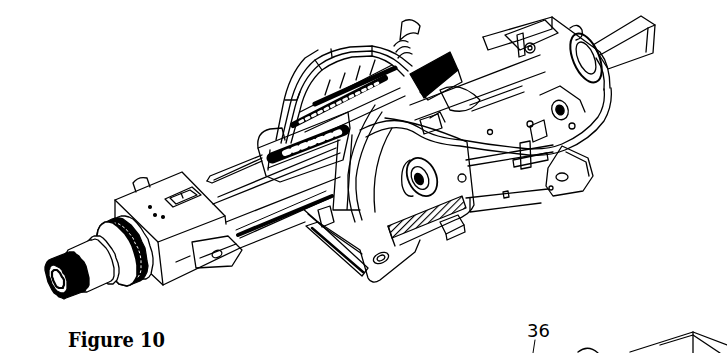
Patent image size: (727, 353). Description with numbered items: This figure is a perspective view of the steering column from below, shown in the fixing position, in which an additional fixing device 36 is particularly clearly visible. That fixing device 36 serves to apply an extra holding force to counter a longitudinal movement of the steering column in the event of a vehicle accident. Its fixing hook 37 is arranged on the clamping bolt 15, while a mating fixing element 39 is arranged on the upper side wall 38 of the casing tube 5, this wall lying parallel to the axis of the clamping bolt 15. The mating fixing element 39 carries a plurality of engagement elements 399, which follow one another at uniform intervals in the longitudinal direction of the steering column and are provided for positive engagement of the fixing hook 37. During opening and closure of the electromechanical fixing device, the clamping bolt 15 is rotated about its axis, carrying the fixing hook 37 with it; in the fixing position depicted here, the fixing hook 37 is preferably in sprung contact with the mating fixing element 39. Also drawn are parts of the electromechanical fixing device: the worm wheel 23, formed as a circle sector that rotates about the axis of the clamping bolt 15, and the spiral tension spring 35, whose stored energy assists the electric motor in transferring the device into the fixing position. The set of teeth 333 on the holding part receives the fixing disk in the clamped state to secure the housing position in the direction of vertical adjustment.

The casing tube 5 is at (275, 197).
The clamping bolt 15 is at (450, 233).
The worm wheel 23 is at (378, 217).
The spiral tension spring 35 is at (423, 237).
The fixing device 36 is at (333, 62).
The fixing hook 37 is at (318, 233).
The upper side wall 38 is at (230, 173).
The mating fixing element 39 is at (293, 140).
The set of teeth 333 is at (480, 170).
The engagement elements 399 is at (297, 100).